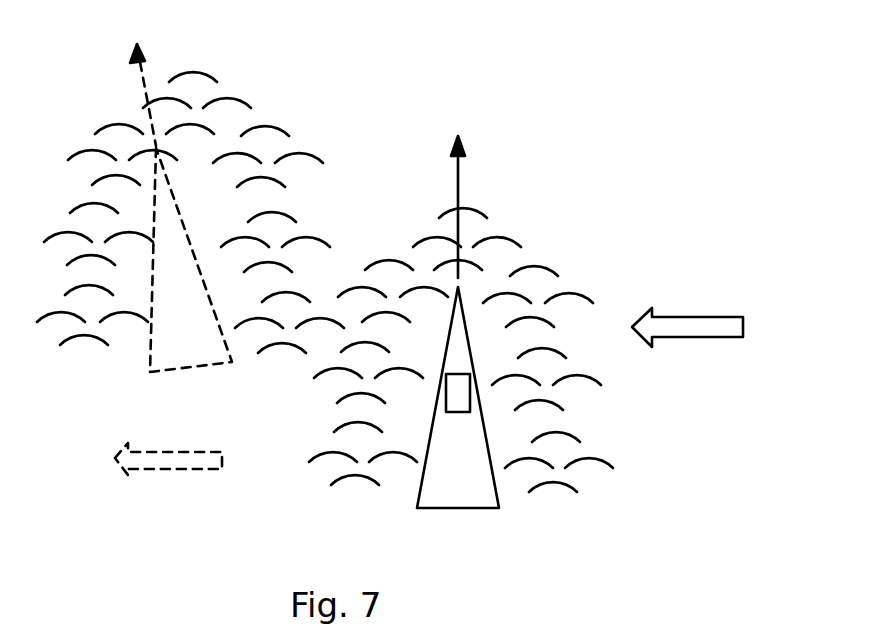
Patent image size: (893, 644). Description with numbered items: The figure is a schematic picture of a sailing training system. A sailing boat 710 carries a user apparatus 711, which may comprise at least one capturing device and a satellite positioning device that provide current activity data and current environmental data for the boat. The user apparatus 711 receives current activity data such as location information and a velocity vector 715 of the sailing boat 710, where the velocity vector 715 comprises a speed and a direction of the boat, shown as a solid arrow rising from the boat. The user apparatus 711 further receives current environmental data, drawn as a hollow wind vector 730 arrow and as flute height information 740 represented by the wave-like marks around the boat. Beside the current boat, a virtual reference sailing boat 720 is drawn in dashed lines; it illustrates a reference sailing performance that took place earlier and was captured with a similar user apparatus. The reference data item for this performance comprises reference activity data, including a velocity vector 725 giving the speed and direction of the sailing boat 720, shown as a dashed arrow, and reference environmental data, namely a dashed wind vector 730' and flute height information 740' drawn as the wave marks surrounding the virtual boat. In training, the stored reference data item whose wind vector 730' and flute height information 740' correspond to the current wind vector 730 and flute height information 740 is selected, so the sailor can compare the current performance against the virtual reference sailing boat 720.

The sailing boat 710 is at (459, 510).
The user apparatus 711 is at (453, 412).
The velocity vector 715 is at (457, 189).
The virtual reference sailing boat 720 is at (187, 367).
The velocity vector 725 is at (147, 97).
The wind vector 730 is at (692, 353).
The wind vector 730' is at (176, 486).
The flute height information 740 is at (461, 340).
The flute height information 740' is at (200, 212).